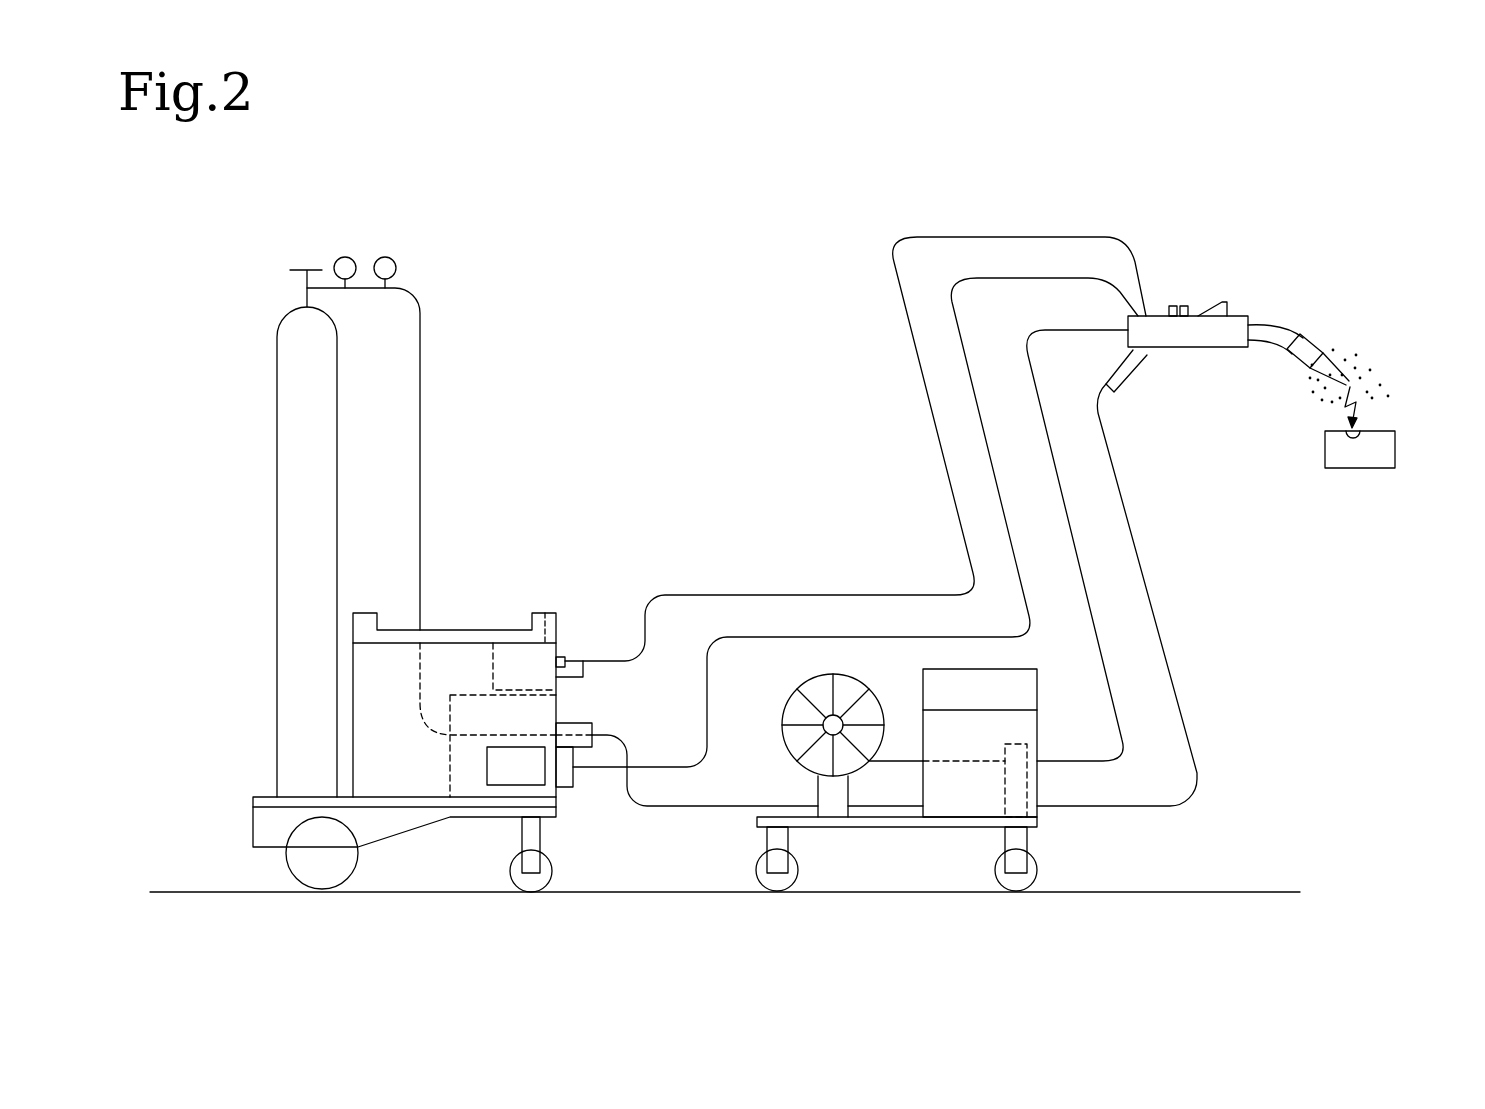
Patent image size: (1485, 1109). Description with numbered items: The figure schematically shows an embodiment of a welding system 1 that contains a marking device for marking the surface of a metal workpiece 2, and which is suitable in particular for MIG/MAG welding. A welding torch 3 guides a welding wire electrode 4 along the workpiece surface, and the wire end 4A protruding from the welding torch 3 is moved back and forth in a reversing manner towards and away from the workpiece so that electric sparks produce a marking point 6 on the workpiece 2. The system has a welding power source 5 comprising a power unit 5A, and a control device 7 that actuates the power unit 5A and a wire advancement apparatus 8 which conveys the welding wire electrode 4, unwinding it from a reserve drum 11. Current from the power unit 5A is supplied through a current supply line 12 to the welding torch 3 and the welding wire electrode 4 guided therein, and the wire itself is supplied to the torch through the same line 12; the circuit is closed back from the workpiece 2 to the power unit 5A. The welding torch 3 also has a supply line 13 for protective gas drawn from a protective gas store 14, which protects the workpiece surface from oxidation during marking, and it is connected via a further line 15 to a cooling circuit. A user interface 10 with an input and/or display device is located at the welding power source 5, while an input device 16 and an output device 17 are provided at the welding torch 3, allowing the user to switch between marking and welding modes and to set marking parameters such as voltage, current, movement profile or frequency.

The welding system 1 is at (798, 561).
The metal workpiece 2 is at (1370, 450).
The welding torch 3 is at (1225, 258).
The welding wire electrode 4 is at (1090, 591).
The wire end 4A is at (1380, 366).
The welding power source 5 is at (395, 654).
The power unit 5A is at (507, 773).
The marking point 6 is at (1360, 430).
The control device 7 is at (438, 766).
The wire advancement apparatus 8 is at (1088, 851).
The user interface 10 is at (546, 625).
The reserve drum 11 is at (843, 690).
The current supply line 12 is at (885, 631).
The supply line 13 is at (1182, 690).
The protective gas store 14 is at (305, 388).
The line 15 is at (704, 590).
The input device 16 is at (1177, 295).
The output device 17 is at (1213, 297).